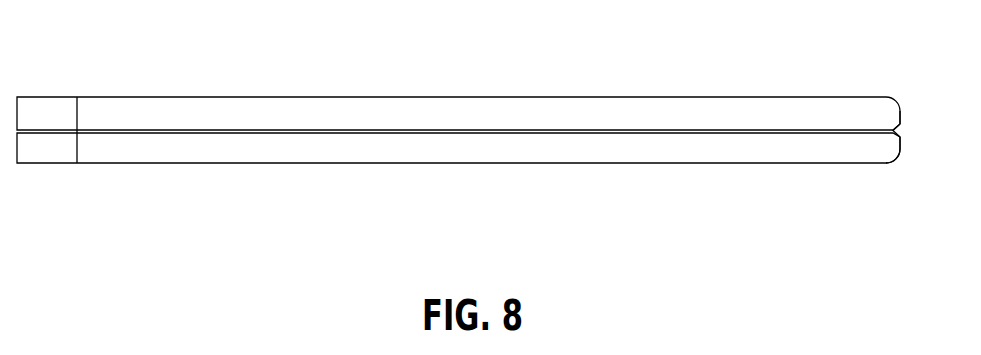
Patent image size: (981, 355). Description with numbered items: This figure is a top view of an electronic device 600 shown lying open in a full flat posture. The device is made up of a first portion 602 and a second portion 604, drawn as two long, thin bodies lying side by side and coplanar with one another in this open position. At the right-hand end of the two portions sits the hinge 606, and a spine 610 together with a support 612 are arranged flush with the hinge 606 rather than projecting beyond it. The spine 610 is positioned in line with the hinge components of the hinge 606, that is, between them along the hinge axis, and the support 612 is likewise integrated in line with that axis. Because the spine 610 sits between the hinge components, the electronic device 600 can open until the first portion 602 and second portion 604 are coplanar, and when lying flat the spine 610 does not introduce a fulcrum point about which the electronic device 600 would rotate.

The electronic device 600 is at (473, 154).
The first portion 602 is at (408, 163).
The second portion 604 is at (407, 97).
The hinge 606 is at (925, 146).
The spine 610 is at (903, 129).
The support 612 is at (909, 154).